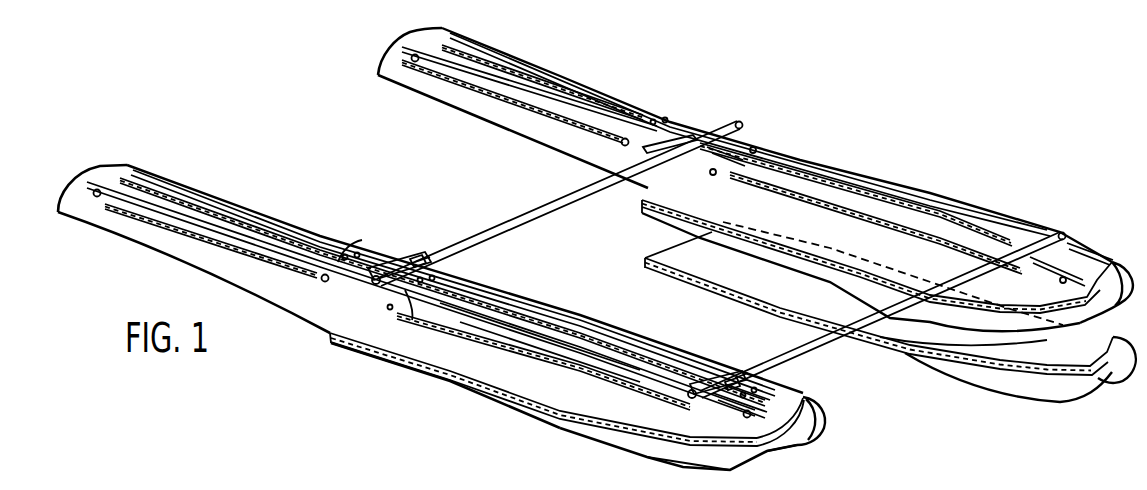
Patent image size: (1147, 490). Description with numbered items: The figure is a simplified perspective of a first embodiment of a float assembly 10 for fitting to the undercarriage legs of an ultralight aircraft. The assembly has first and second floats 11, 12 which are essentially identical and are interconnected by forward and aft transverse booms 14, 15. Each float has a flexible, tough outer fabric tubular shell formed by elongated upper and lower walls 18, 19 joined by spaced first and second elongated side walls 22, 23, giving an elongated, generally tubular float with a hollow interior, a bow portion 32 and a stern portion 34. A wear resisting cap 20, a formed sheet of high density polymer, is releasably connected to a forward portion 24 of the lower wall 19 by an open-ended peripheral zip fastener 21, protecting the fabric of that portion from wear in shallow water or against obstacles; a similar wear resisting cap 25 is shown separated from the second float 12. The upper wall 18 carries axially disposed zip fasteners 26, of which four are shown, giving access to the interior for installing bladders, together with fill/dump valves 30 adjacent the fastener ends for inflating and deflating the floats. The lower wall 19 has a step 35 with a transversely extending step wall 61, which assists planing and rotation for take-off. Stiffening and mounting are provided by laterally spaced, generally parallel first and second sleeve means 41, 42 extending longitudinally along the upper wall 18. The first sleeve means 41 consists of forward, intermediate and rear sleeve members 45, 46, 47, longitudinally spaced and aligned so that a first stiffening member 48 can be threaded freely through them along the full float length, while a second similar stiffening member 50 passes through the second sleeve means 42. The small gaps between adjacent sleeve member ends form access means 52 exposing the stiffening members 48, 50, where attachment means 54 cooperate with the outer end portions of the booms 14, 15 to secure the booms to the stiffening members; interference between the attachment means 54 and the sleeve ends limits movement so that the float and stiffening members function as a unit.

The float assembly 10 is at (680, 48).
The first float 11 is at (406, 397).
The second float 12 is at (880, 159).
The forward transverse boom 14 is at (820, 349).
The aft transverse boom 15 is at (530, 222).
The upper wall 18 is at (381, 264).
The lower wall 19 is at (505, 413).
The wear resisting cap 20 is at (612, 438).
The peripheral zip fastener 21 is at (623, 438).
The first side wall 22 is at (825, 422).
The second side wall 23 is at (513, 370).
The forward portion of the lower wall 24 is at (688, 463).
The wear resisting cap 25 is at (1001, 407).
The axially disposed zip fasteners 26 is at (254, 228).
The fill/dump valves 30 is at (345, 256).
The bow portion 32 is at (799, 449).
The stern portion 34 is at (96, 169).
The step 35 is at (328, 340).
The first sleeve means 41 is at (624, 364).
The second sleeve means 42 is at (218, 199).
The forward sleeve member 45 is at (742, 400).
The intermediate sleeve member 46 is at (567, 346).
The rear sleeve member 47 is at (268, 249).
The first stiffening member 48 is at (369, 282).
The second stiffening member 50 is at (418, 261).
The access means 52 is at (377, 262).
The attachment means 54 is at (432, 262).
The step wall 61 is at (365, 354).